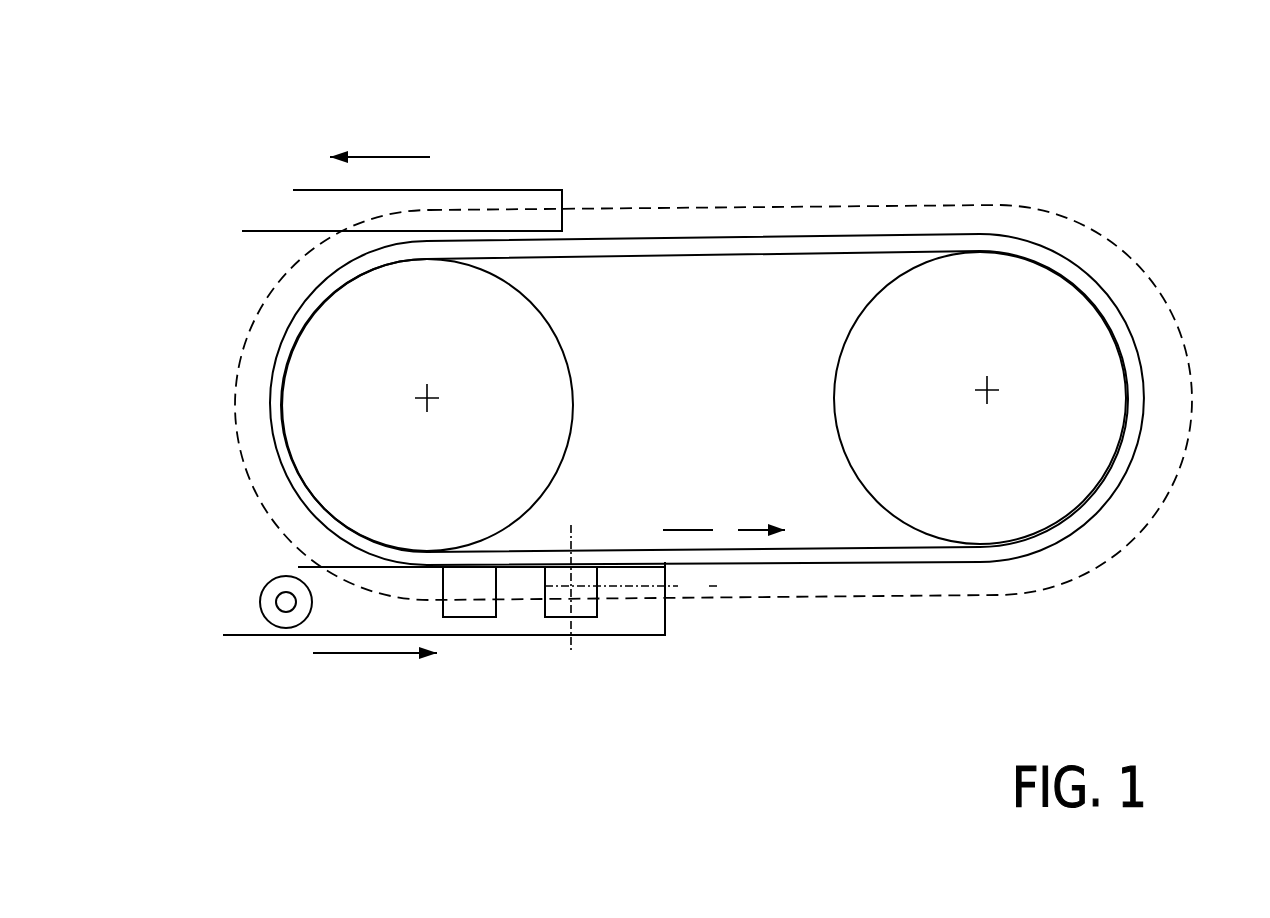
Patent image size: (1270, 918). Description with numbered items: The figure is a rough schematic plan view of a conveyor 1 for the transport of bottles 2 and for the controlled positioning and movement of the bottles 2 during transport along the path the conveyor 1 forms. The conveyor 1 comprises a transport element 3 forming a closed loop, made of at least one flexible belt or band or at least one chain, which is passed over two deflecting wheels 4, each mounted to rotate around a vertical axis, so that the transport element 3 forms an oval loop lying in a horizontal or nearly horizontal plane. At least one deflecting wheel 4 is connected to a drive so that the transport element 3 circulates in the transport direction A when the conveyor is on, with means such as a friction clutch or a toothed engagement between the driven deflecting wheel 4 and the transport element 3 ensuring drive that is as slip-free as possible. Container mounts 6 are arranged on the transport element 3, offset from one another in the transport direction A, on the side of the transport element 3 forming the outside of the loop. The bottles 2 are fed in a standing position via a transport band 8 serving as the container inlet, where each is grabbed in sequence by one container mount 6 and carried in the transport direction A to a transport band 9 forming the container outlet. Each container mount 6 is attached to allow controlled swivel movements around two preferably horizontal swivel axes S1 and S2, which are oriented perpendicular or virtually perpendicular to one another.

The conveyor 1 is at (686, 140).
The bottle 2 is at (273, 600).
The transport element 3 is at (795, 247).
The deflecting wheel 4 is at (523, 400).
The container mount 6 is at (470, 598).
The transport band 8 is at (308, 625).
The transport band 9 is at (436, 200).
The swivel axis S1 is at (575, 537).
The swivel axis S2 is at (631, 587).
The transport direction A is at (724, 531).